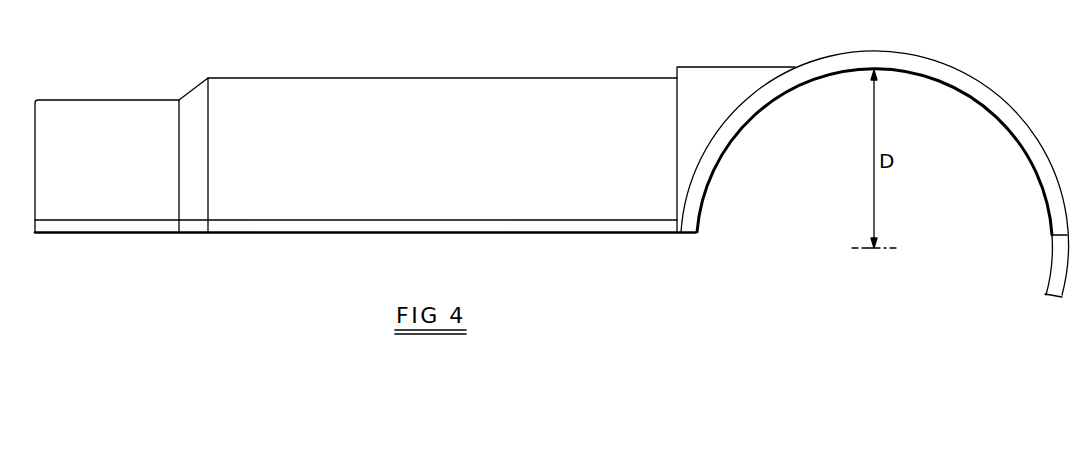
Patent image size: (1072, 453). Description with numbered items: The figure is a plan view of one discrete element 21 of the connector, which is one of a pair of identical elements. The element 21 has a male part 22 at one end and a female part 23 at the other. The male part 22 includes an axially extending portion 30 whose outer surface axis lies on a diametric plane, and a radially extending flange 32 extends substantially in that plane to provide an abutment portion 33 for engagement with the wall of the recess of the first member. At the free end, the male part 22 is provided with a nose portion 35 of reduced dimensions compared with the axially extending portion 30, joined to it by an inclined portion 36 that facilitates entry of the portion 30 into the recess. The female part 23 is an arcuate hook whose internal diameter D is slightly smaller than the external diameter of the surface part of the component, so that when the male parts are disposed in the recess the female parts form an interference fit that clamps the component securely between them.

The discrete element 21 is at (775, 44).
The male part 22 is at (535, 52).
The female part 23 is at (1026, 80).
The axially extending portion 30 is at (540, 140).
The flange 32 is at (435, 209).
The abutment portion 33 is at (380, 194).
The nose portion 35 is at (135, 127).
The inclined portion 36 is at (244, 52).